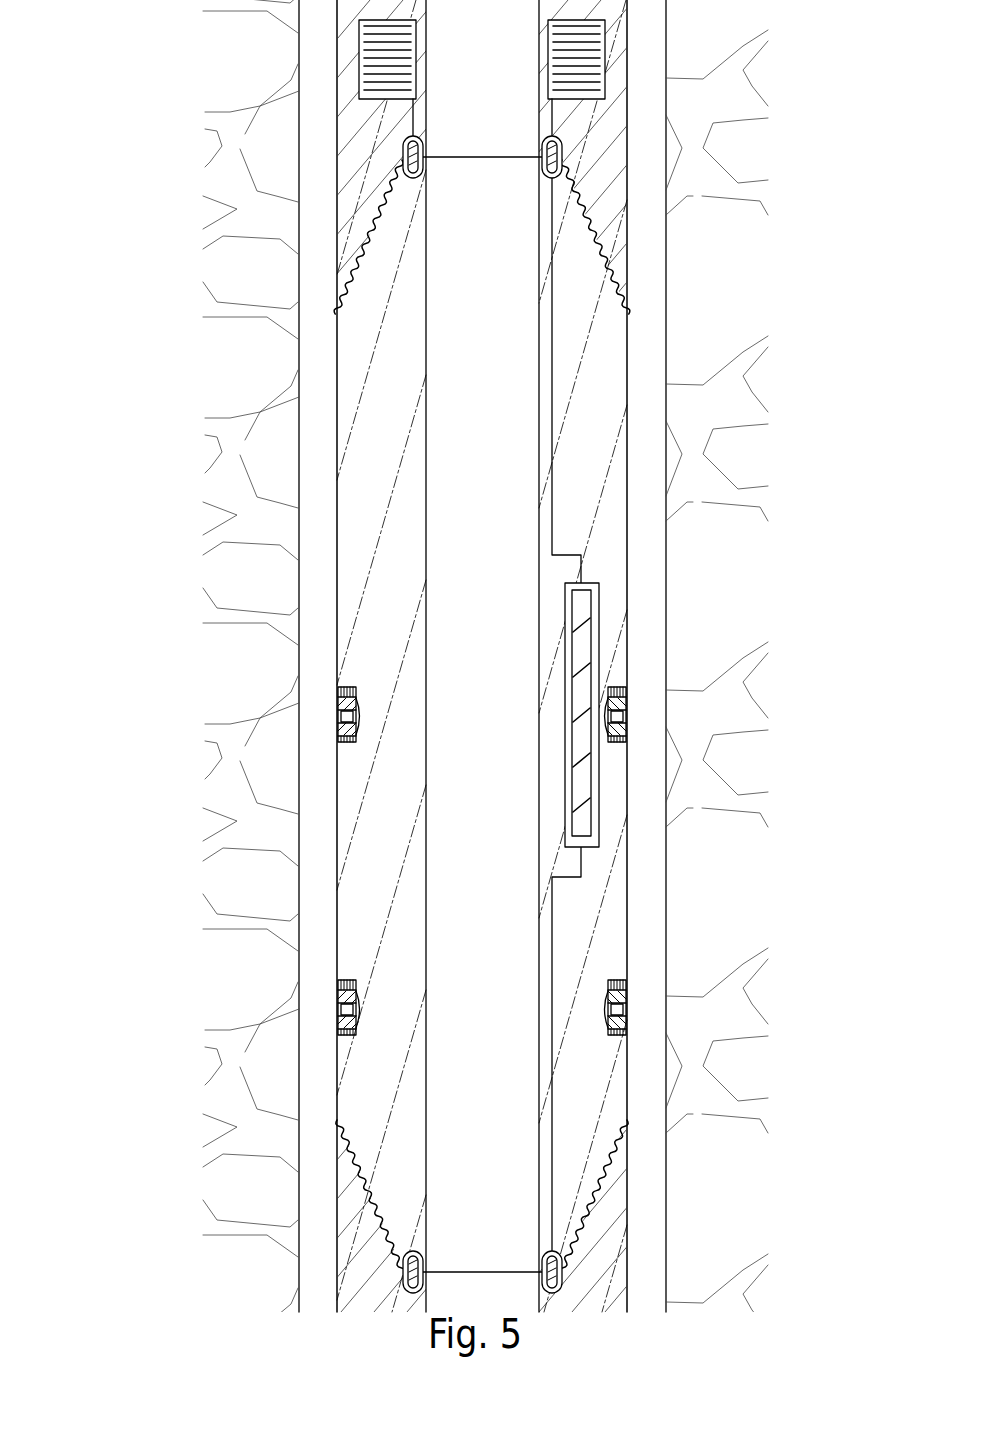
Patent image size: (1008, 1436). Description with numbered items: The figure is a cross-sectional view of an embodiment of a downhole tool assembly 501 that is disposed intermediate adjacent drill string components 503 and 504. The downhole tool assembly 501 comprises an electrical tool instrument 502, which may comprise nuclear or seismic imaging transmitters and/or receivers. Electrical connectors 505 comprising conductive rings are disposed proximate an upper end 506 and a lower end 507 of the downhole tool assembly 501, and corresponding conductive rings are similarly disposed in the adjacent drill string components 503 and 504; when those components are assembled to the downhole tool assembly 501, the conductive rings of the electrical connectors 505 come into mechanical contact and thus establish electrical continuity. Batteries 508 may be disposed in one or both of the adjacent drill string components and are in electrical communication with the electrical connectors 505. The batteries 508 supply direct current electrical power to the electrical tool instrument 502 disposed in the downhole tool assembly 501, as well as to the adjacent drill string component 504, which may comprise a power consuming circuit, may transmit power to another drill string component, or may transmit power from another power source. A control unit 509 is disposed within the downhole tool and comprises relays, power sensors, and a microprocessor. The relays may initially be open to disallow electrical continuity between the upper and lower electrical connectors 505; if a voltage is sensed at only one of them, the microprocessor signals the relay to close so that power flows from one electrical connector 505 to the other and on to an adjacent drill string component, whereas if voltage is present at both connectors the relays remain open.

The downhole tool assembly 501 is at (170, 364).
The electrical tool instrument 502 is at (318, 1011).
The adjacent drill string component 503 is at (597, 123).
The adjacent drill string component 504 is at (608, 1225).
The electrical connectors 505 is at (405, 150).
The upper end 506 is at (610, 330).
The lower end 507 is at (575, 1095).
The batteries 508 is at (553, 78).
The control unit 509 is at (582, 642).